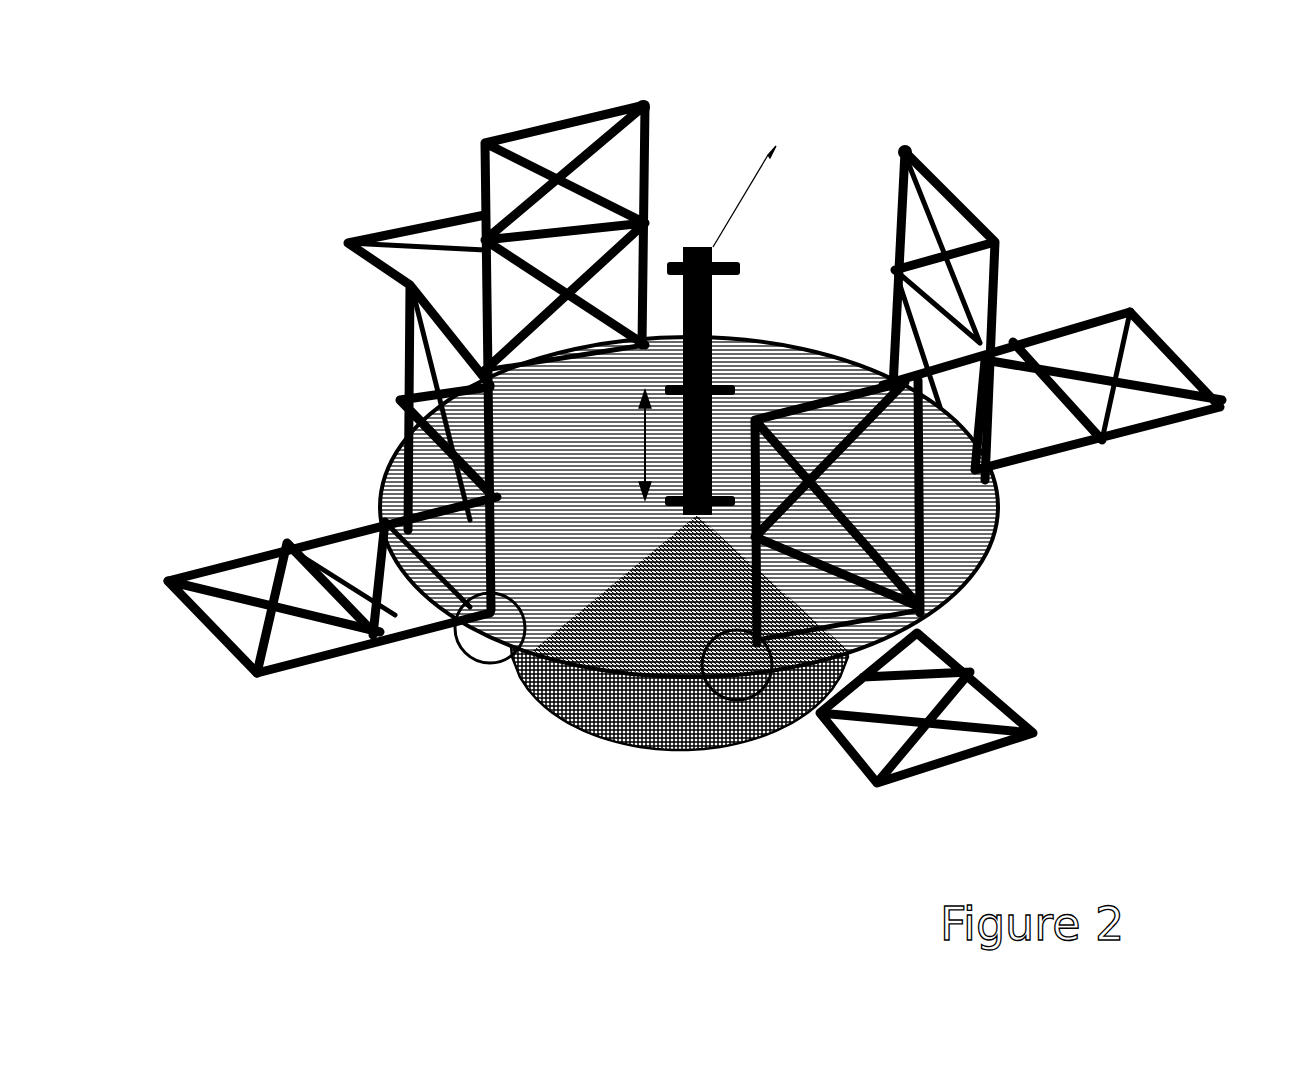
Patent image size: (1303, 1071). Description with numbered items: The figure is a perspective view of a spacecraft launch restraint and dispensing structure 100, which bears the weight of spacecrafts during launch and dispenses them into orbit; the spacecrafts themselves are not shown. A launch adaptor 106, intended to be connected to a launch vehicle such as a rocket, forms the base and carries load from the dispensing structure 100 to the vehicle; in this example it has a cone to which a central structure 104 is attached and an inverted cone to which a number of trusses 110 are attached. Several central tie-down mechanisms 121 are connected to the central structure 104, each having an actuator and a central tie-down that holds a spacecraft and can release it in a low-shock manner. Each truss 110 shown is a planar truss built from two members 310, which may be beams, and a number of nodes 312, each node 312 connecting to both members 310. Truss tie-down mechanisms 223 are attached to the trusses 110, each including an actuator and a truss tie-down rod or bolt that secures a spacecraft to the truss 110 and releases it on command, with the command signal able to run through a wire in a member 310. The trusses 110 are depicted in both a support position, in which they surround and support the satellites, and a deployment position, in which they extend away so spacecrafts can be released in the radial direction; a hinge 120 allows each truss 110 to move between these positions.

The spacecraft launch restraint and dispensing structure 100 is at (466, 72).
The central structure 104 is at (719, 328).
The launch adaptor 106 is at (838, 356).
The truss 110 is at (977, 194).
The hinge 120 is at (465, 653).
The central tie-down mechanism 121 is at (730, 268).
The truss tie-down mechanism 223 is at (662, 106).
The member 310 is at (212, 565).
The node 312 is at (208, 627).